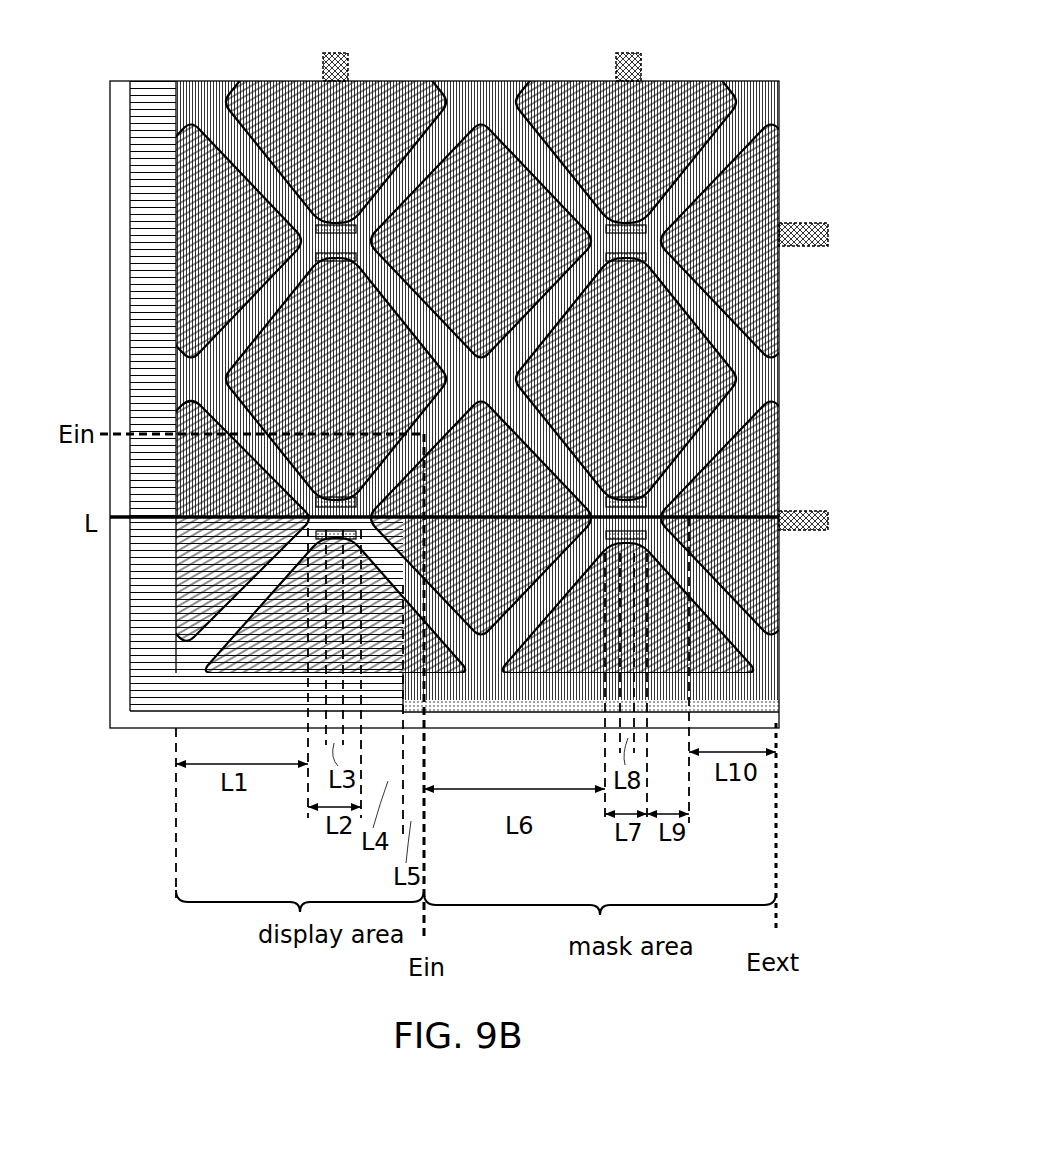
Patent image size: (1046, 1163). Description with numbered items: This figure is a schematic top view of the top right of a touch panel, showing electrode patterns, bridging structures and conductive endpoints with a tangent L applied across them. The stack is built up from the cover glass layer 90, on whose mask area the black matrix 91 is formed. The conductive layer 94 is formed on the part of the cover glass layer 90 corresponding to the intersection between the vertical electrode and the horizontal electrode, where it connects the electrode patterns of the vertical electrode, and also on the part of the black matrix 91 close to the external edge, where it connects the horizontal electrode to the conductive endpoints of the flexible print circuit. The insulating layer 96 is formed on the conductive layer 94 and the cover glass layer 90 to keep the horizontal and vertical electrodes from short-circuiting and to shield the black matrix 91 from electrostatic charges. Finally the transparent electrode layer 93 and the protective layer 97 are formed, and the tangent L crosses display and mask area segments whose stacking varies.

The cover glass layer 90 is at (150, 677).
The black matrix 91 is at (753, 672).
The transparent electrode layer 93 is at (168, 205).
The conductive layer 94 is at (325, 48).
The insulating layer 96 is at (771, 410).
The protective layer 97 is at (110, 95).